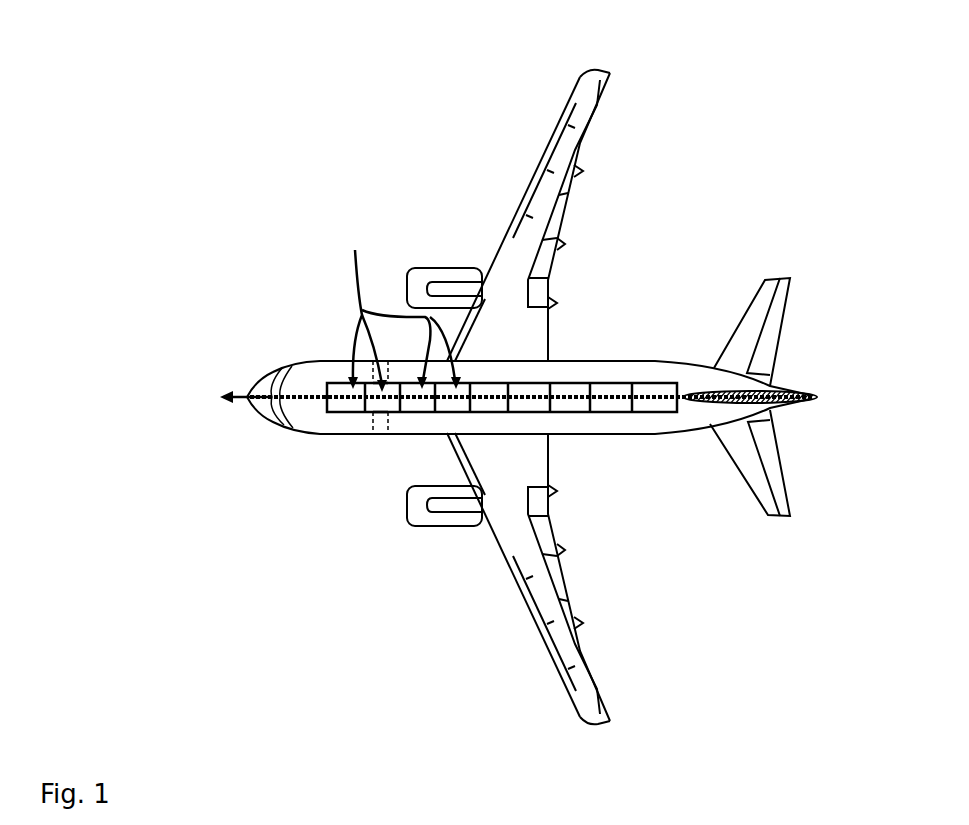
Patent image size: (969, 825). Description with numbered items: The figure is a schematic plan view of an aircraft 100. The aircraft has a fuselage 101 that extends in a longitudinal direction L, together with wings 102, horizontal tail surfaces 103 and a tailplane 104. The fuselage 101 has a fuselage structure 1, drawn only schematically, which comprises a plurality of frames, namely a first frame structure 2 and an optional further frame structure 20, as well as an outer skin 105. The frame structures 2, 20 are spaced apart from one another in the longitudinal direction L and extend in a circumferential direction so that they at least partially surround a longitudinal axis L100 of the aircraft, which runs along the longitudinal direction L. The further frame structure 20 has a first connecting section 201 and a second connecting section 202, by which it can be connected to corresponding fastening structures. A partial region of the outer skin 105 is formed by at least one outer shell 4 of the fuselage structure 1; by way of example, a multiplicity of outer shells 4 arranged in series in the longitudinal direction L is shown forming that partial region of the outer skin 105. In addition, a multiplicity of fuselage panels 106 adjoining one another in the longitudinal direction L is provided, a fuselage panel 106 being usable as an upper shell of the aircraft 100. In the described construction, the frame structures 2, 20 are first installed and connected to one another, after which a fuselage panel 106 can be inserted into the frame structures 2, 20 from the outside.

The aircraft 100 is at (770, 90).
The fuselage 101 is at (592, 350).
The wings 102 is at (592, 82).
The horizontal tail surfaces 103 is at (770, 288).
The tailplane 104 is at (755, 395).
The outer skin 105 is at (620, 434).
The fuselage panel 106 is at (647, 387).
The longitudinal axis L100 is at (313, 397).
The longitudinal direction L is at (258, 400).
The fuselage structure 1 is at (340, 420).
The first frame structure 2 is at (372, 418).
The further frame structure 20 is at (388, 418).
The first connecting section 201 is at (392, 388).
The second connecting section 202 is at (390, 413).
The outer shell 4 is at (404, 309).